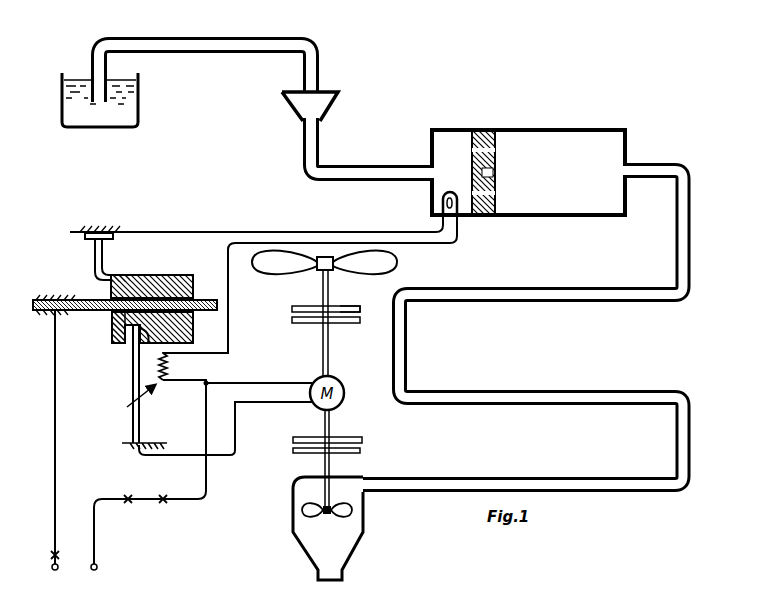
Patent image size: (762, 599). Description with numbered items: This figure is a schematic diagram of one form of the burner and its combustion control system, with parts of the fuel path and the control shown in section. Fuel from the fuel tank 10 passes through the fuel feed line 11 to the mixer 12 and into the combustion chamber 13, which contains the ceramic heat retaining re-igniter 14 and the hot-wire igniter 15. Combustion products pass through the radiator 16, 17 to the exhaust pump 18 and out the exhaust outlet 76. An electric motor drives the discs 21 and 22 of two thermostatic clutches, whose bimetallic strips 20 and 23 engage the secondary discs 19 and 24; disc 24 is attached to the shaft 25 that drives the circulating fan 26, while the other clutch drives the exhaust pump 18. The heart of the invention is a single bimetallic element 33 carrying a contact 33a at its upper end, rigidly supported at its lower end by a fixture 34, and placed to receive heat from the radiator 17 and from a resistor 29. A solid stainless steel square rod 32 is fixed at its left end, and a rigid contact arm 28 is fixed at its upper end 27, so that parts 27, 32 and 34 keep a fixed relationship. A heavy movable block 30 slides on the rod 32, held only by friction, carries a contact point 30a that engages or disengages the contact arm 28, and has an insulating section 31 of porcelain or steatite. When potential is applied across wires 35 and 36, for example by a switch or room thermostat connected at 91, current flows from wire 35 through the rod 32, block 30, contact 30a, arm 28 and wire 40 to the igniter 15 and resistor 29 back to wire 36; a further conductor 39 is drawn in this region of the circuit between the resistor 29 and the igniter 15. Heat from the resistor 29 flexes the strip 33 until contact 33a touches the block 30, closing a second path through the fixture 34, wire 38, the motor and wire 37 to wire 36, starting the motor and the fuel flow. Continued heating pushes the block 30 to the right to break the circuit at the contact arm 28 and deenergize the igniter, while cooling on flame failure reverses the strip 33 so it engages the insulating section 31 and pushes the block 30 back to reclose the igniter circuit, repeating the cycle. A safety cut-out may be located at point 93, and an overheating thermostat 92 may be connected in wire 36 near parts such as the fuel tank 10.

The fuel tank 10 is at (139, 107).
The fuel feed line 11 is at (205, 39).
The mixer 12 is at (336, 106).
The combustion chamber 13 is at (554, 131).
The ceramic heat retaining re-igniter 14 is at (497, 133).
The hot-wire igniter 15 is at (443, 199).
The radiator 16 is at (690, 232).
The radiator 17 is at (536, 390).
The exhaust pump 18 is at (356, 507).
The secondary disc 19 is at (358, 453).
The bimetallic strip 20 is at (364, 441).
The disc 21 is at (298, 437).
The disc 22 is at (356, 321).
The bimetallic strip 23 is at (350, 308).
The secondary disc 24 is at (297, 308).
The shaft 25 is at (322, 296).
The circulating fan 26 is at (388, 264).
The upper end of contact arm 27 is at (100, 231).
The contact arm 28 is at (103, 258).
The resistor 29 is at (171, 366).
The movable block 30 is at (194, 288).
The contact point 30a is at (112, 276).
The insulating section 31 is at (114, 336).
The square rod 32 is at (88, 296).
The bimetallic element 33 is at (132, 385).
The contact 33a is at (146, 342).
The fixture 34 is at (124, 444).
The wire 35 is at (53, 550).
The wire 36 is at (96, 549).
The wire 37 is at (236, 384).
The wire 38 is at (272, 406).
The conductor 39 is at (230, 344).
The wire 40 is at (286, 232).
The exhaust outlet 76 is at (340, 573).
The connection point 91 is at (58, 556).
The overheating thermostat 92 is at (165, 505).
The safety switch location 93 is at (128, 505).